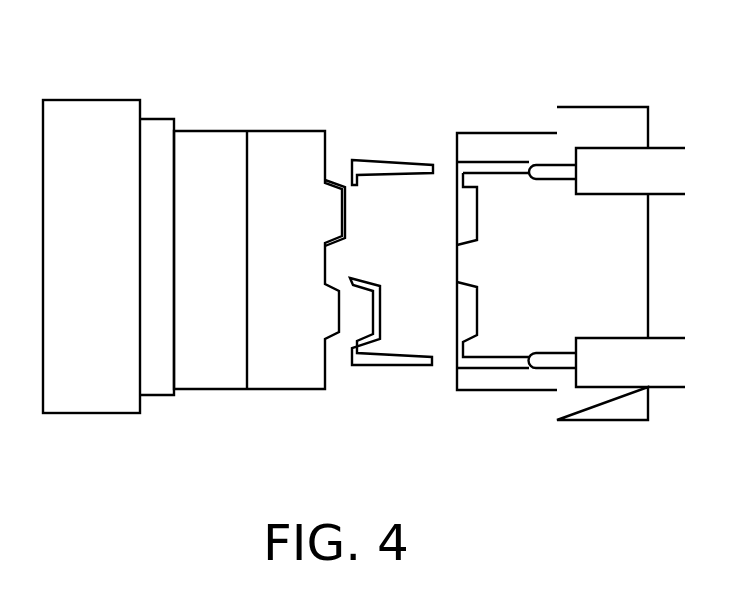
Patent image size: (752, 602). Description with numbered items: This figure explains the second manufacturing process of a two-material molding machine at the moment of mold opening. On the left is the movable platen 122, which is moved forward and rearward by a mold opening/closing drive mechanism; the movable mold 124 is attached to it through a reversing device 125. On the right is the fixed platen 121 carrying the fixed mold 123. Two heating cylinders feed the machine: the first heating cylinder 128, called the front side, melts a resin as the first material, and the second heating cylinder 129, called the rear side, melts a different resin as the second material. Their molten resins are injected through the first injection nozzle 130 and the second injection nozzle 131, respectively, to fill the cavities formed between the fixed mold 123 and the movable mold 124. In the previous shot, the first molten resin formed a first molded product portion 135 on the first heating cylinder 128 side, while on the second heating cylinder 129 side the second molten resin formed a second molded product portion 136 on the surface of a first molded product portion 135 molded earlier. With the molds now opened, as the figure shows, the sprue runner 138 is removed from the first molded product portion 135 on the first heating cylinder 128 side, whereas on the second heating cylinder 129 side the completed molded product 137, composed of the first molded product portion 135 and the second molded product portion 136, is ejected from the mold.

The fixed platen 121 is at (602, 122).
The movable platen 122 is at (100, 120).
The fixed mold 123 is at (485, 140).
The movable mold 124 is at (293, 147).
The reversing device 125 is at (213, 117).
The first heating cylinder 128 is at (672, 155).
The second heating cylinder 129 is at (665, 373).
The first injection nozzle 130 is at (537, 166).
The second injection nozzle 131 is at (540, 365).
The first molded product portion 135 is at (348, 207).
The second molded product portion 136 is at (382, 312).
The molded product 137 is at (378, 275).
The sprue runner 138 is at (395, 160).